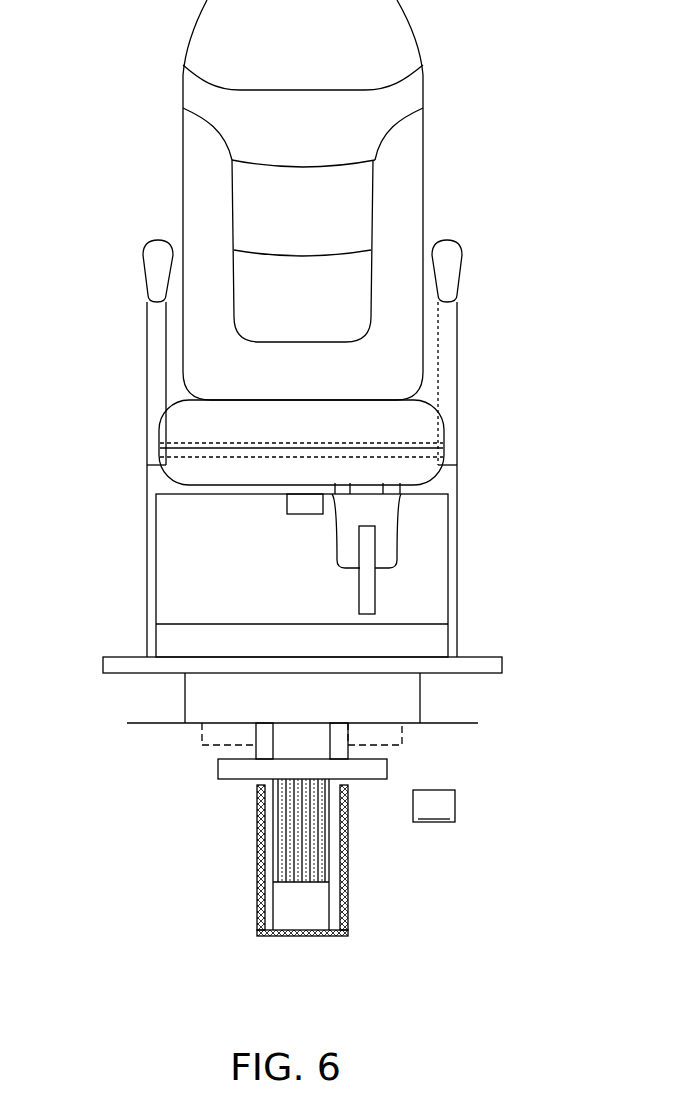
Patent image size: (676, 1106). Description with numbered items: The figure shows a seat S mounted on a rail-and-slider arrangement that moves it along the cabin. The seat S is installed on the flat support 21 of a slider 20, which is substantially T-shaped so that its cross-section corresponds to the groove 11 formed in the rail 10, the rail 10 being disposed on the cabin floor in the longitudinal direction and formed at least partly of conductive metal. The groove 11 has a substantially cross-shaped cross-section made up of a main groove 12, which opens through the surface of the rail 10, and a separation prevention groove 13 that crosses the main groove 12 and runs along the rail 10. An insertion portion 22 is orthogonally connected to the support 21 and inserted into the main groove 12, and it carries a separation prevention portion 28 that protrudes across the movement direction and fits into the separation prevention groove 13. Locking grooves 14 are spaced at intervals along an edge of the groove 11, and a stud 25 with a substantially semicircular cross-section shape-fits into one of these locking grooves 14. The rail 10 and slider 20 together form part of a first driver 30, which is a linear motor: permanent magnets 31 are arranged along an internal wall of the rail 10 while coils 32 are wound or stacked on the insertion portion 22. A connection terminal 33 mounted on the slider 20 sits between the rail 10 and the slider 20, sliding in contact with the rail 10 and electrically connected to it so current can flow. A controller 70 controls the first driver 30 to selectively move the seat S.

The seat S is at (407, 422).
The slider 20 is at (106, 630).
The support 21 is at (397, 685).
The groove 11 is at (263, 714).
The main groove 12 is at (336, 740).
The locking grooves 14 is at (402, 735).
The stud 25 is at (408, 735).
The insertion portion 22 is at (300, 748).
The separation prevention groove 13 is at (387, 766).
The separation prevention portion 28 is at (232, 772).
The rail 10 is at (311, 880).
The permanent magnets 31 is at (350, 898).
The coils 32 is at (313, 840).
The connection terminal 33 is at (300, 908).
The first driver 30 is at (425, 842).
The controller 70 is at (413, 805).